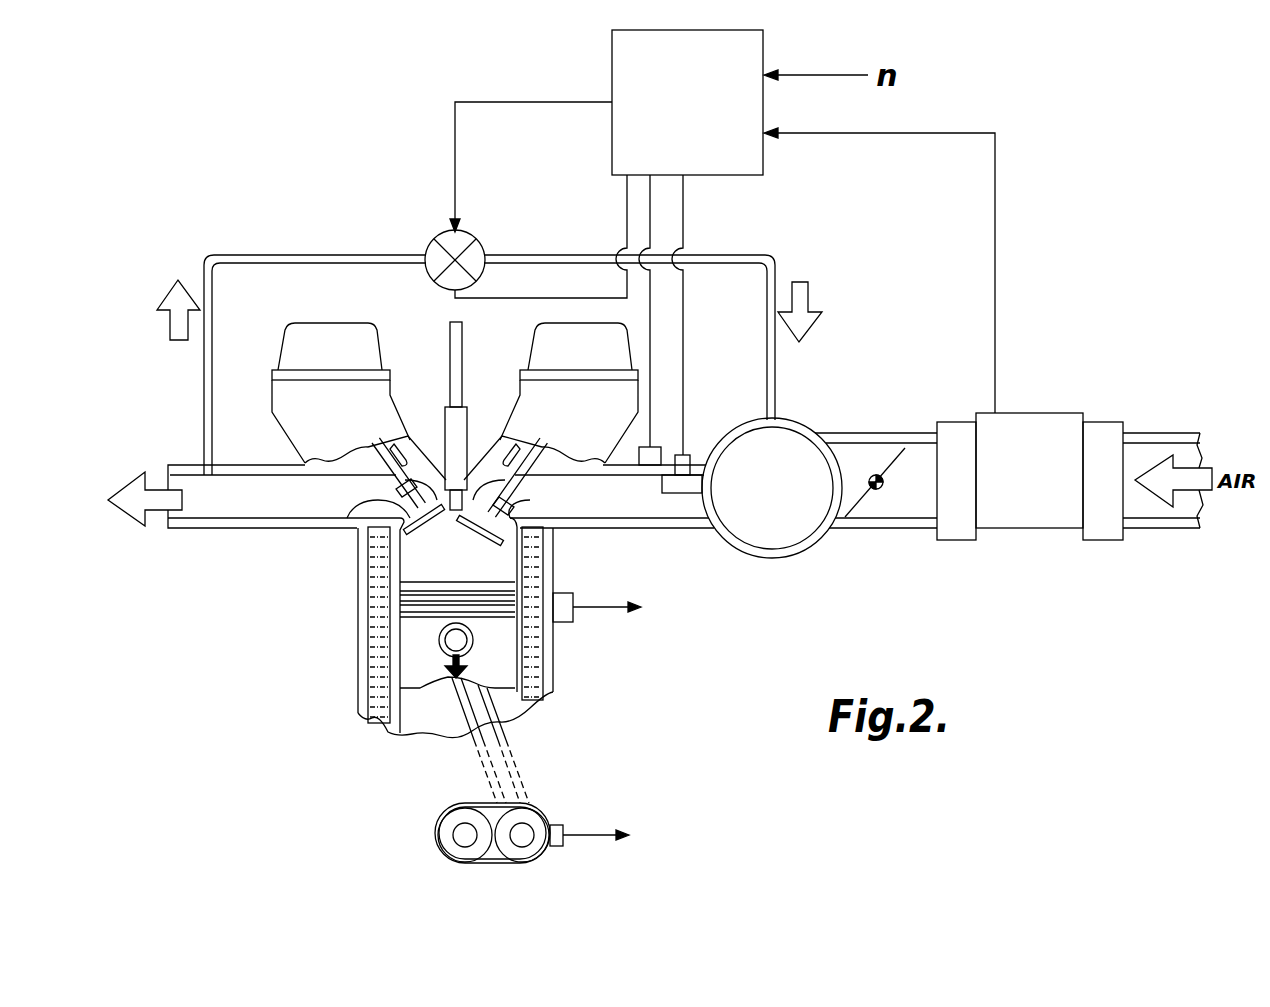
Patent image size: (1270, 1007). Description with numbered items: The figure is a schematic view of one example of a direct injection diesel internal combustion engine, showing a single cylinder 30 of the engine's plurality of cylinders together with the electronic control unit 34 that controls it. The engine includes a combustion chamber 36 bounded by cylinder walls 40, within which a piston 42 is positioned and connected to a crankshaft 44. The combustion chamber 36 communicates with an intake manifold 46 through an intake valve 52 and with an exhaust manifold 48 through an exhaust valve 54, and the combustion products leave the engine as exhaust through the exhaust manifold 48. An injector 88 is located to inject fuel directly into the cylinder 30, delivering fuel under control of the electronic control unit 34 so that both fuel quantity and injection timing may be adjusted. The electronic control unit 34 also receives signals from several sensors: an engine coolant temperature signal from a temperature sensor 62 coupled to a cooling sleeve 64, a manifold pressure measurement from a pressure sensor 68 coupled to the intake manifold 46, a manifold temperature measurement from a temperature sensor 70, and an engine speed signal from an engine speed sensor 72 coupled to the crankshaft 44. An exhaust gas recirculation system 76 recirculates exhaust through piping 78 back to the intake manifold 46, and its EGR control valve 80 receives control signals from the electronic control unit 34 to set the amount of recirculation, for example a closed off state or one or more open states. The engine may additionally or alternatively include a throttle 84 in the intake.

The cylinder 30 is at (358, 678).
The electronic control unit 34 is at (612, 66).
The combustion chamber 36 is at (438, 566).
The cylinder walls 40 is at (408, 567).
The piston 42 is at (498, 652).
The crankshaft 44 is at (460, 832).
The intake manifold 46 is at (633, 524).
The exhaust manifold 48 is at (200, 528).
The intake valve 52 is at (530, 500).
The exhaust valve 54 is at (388, 502).
The temperature sensor 62 is at (576, 616).
The cooling sleeve 64 is at (533, 693).
The pressure sensor 68 is at (685, 494).
The temperature sensor 70 is at (655, 446).
The engine speed sensor 72 is at (556, 822).
The exhaust gas recirculation system 76 is at (383, 240).
The piping 78 is at (204, 386).
The EGR control valve 80 is at (473, 240).
The throttle 84 is at (877, 474).
The injector 88 is at (446, 408).